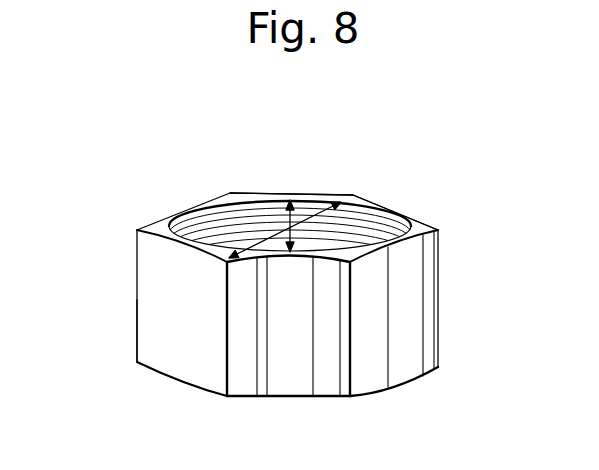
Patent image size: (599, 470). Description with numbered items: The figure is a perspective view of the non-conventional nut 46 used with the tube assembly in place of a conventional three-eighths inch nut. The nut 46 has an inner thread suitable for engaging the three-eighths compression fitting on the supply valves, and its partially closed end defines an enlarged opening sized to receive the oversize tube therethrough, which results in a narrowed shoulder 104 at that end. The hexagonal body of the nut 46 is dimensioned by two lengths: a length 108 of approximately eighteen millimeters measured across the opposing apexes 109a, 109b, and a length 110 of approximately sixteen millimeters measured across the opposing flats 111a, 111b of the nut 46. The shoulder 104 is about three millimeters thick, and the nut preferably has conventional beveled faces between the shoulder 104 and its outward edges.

The shoulder 104 is at (210, 198).
The length across apexes 108 is at (342, 201).
The length across flats 110 is at (291, 199).
The flat 111a is at (268, 194).
The flat 111b is at (260, 392).
The apex 109a is at (351, 195).
The apex 109b is at (227, 340).
The nut 46 is at (307, 368).